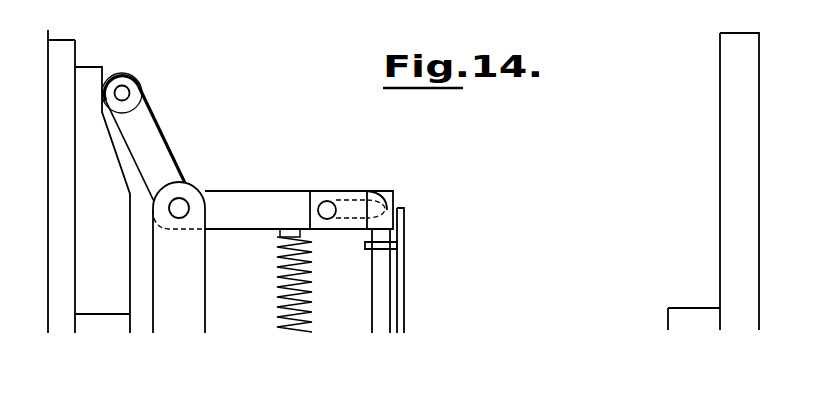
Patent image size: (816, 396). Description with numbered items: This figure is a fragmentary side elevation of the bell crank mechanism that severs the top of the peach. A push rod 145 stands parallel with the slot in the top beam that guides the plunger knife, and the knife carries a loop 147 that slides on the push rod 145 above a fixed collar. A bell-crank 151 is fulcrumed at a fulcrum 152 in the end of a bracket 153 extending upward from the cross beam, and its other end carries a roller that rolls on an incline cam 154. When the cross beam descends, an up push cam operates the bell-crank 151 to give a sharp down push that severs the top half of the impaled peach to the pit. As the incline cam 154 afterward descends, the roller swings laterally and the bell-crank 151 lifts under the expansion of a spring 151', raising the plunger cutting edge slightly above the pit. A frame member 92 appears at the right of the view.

The frame column 92 is at (732, 171).
The push rod 145 is at (373, 294).
The loop 147 is at (367, 247).
The bell-crank 151 is at (299, 193).
The spring 151' is at (265, 280).
The fulcrum 152 is at (181, 204).
The bracket 153 is at (138, 84).
The incline cam 154 is at (89, 181).